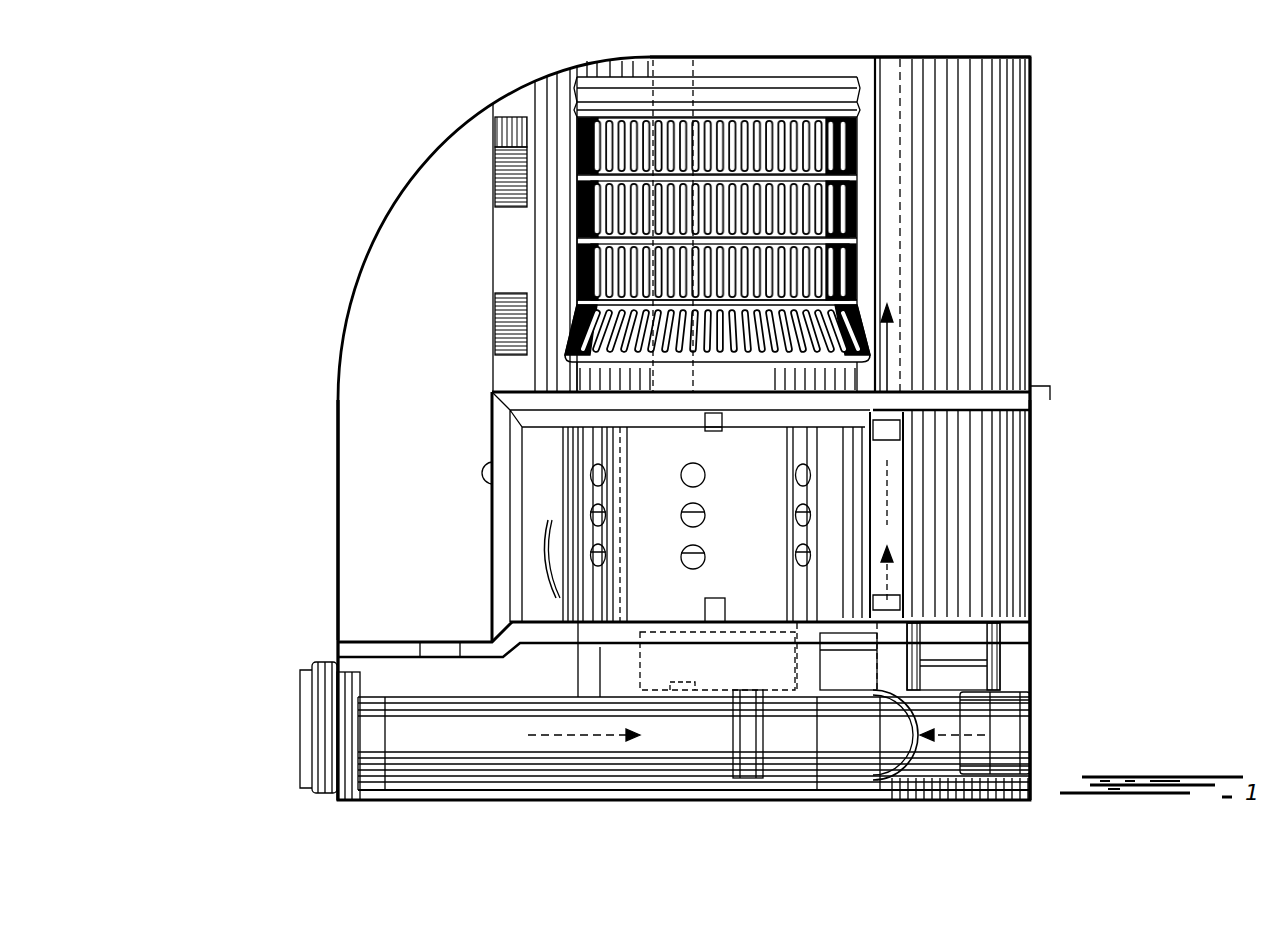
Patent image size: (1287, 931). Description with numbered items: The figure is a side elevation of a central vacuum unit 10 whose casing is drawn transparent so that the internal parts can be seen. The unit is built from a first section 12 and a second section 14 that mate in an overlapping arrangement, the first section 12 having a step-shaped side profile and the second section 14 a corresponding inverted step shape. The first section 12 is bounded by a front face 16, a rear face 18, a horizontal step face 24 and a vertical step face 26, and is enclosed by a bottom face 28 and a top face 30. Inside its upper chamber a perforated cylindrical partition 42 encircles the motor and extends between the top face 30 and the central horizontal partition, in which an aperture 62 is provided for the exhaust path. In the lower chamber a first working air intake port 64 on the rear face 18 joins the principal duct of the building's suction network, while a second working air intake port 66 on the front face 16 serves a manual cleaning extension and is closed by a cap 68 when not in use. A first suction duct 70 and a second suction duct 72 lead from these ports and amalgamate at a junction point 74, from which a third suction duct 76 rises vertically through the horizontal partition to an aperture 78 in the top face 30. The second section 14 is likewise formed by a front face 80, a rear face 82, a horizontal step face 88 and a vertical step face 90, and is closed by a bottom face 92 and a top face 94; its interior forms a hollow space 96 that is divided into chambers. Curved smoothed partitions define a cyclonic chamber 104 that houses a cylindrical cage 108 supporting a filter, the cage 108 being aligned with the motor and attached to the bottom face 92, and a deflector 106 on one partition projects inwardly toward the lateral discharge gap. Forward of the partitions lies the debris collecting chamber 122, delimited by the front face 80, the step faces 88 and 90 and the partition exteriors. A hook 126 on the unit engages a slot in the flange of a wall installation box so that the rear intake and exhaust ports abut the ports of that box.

The central vacuum unit 10 is at (230, 342).
The first section 12 is at (1060, 524).
The second section 14 is at (1062, 150).
The front face 16 is at (322, 668).
The rear face 18 is at (1030, 592).
The horizontal step face 24 is at (400, 648).
The vertical step face 26 is at (512, 565).
The bottom face 28 is at (730, 800).
The top face 30 is at (560, 362).
The perforated cylindrical partition 42 is at (724, 511).
The aperture 62 is at (980, 668).
The first working air intake port 64 is at (1033, 742).
The second working air intake port 66 is at (322, 742).
The cap 68 is at (320, 722).
The first suction duct 70 is at (935, 745).
The second suction duct 72 is at (695, 745).
The junction point 74 is at (900, 745).
The third suction duct 76 is at (900, 480).
The aperture 78 is at (880, 395).
The front face 80 is at (348, 320).
The rear face 82 is at (1030, 290).
The horizontal step face 88 is at (435, 640).
The vertical step face 90 is at (490, 472).
The bottom face 92 is at (500, 328).
The top face 94 is at (830, 58).
The hollow space 96 is at (942, 242).
The cyclonic chamber 104 is at (958, 189).
The deflector 106 is at (505, 190).
The cylindrical cage 108 is at (740, 93).
The debris collecting chamber 122 is at (360, 492).
The hook 126 is at (1050, 392).